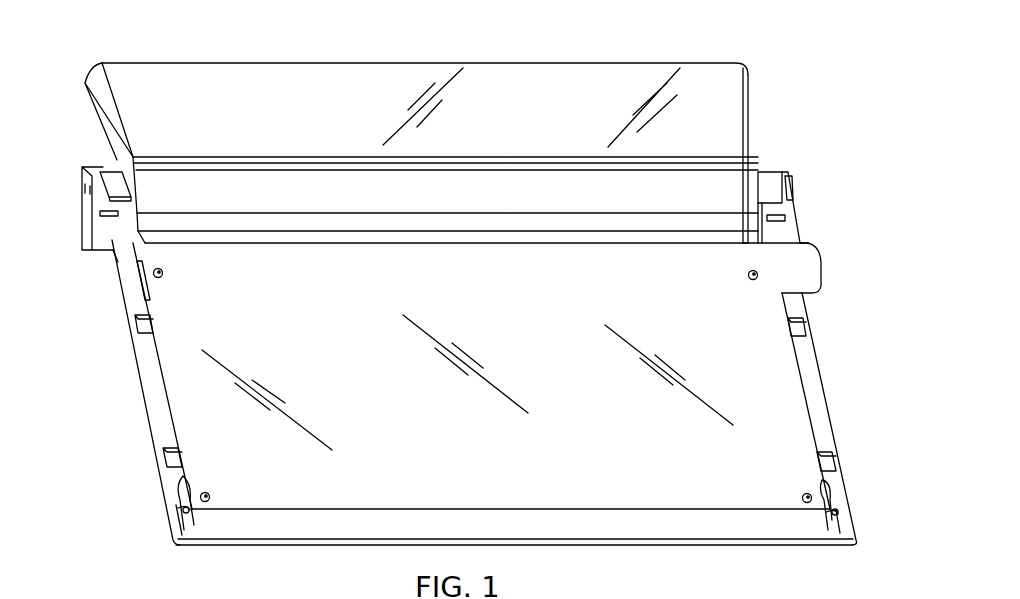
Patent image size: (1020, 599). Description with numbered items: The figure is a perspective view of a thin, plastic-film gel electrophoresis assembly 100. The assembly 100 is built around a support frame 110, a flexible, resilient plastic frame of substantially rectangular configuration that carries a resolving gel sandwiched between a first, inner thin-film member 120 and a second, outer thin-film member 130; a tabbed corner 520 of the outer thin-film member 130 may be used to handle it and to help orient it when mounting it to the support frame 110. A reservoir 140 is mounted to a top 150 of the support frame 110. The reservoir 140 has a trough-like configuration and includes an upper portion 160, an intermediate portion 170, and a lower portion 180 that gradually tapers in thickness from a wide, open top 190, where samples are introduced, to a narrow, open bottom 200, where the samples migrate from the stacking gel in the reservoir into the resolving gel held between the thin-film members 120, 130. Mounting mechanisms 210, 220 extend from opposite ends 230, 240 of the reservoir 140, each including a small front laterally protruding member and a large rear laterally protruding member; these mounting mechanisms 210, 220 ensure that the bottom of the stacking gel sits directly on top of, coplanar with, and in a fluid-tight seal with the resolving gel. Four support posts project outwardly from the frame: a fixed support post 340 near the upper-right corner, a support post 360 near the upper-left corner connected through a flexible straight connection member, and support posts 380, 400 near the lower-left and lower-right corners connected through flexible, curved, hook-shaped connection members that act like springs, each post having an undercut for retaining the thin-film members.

The thin, plastic-film gel electrophoresis assembly 100 is at (818, 130).
The support frame 110 is at (832, 361).
The first, inner thin-film member 120 is at (790, 525).
The second, outer thin-film member 130 is at (793, 415).
The reservoir 140 is at (92, 64).
The top of the support frame 150 is at (79, 162).
The upper portion 160 is at (565, 111).
The intermediate portion 170 is at (762, 166).
The lower portion 180 is at (572, 202).
The wide, open top 190 is at (721, 62).
The narrow, open bottom 200 is at (585, 235).
The mounting mechanism 210 is at (97, 196).
The mounting mechanism 220 is at (803, 202).
The end of the reservoir 230 is at (135, 190).
The end of the reservoir 240 is at (753, 190).
The fixed support post 340 is at (755, 282).
The support post 360 is at (161, 279).
The support post 380 is at (206, 492).
The support post 400 is at (806, 493).
The tabbed corner 520 is at (819, 268).